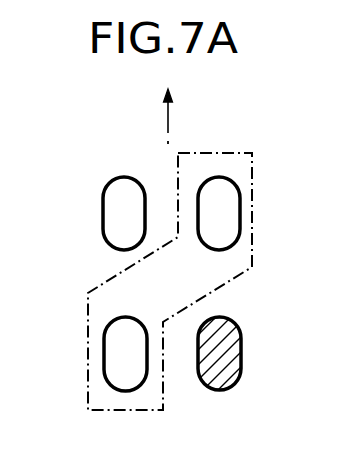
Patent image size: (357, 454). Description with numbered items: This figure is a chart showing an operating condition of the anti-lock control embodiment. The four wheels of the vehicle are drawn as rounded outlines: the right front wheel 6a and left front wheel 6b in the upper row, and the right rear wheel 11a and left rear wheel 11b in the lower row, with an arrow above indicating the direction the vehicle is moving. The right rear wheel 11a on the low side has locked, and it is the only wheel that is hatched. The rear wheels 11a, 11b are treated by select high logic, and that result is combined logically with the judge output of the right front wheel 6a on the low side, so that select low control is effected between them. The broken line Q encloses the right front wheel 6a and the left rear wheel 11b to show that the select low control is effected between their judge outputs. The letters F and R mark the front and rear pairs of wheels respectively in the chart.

The right front wheel 6a is at (232, 214).
The left front wheel 6b is at (112, 212).
The right rear wheel 11a is at (232, 357).
The left rear wheel 11b is at (113, 357).
The gap F between openings F is at (197, 203).
The gap R between openings R is at (199, 345).
The broken line Q is at (252, 170).